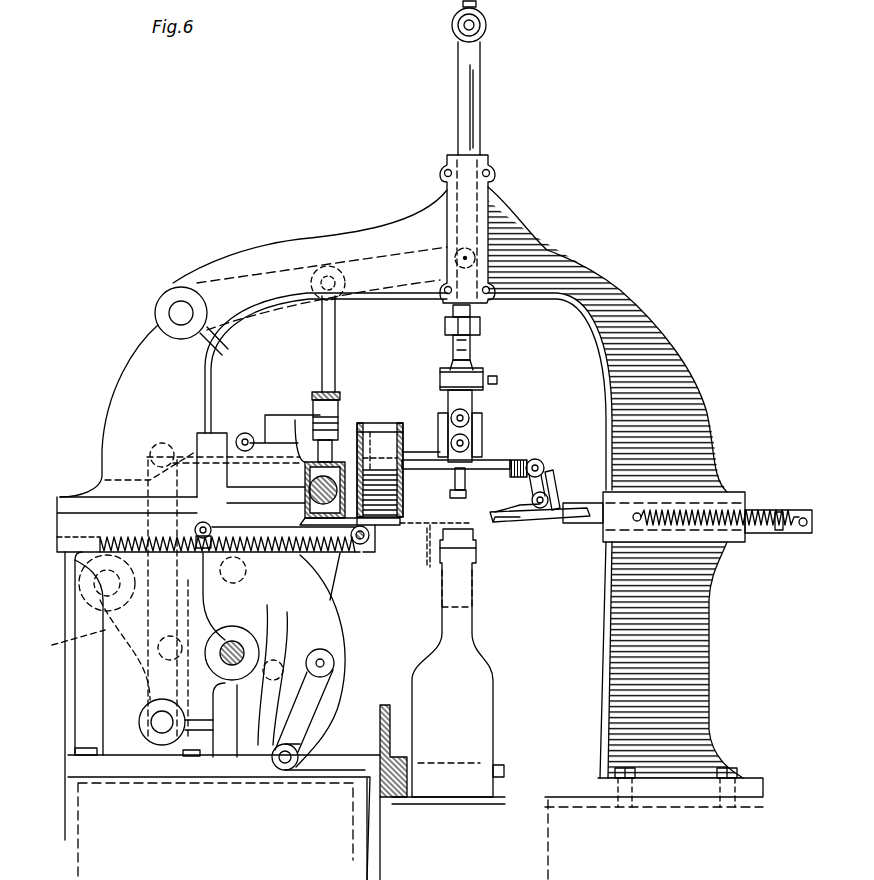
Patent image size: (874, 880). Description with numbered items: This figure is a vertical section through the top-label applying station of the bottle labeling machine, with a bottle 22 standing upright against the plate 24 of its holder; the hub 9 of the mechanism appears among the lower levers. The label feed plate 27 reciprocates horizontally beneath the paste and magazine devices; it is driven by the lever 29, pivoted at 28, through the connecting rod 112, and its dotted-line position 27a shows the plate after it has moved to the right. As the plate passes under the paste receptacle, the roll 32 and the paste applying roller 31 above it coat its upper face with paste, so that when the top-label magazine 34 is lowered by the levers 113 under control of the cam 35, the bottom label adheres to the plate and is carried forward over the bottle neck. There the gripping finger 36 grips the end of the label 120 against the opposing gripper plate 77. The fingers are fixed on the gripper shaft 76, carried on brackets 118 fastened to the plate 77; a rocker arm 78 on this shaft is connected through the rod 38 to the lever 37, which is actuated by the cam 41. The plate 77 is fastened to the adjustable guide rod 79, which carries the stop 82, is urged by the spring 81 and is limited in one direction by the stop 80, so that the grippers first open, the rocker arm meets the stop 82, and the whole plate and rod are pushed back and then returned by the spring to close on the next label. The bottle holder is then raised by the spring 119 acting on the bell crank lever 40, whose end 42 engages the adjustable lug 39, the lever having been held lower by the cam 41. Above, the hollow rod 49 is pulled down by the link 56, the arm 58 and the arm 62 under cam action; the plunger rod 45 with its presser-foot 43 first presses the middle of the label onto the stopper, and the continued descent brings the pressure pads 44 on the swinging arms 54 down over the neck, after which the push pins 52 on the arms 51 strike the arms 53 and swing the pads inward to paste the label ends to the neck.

The main shaft hub 9 is at (235, 640).
The bottle 22 is at (458, 663).
The plate 24 is at (455, 806).
The label feed plate 27 is at (392, 528).
The dotted line position of the label feed plate 27a is at (424, 555).
The pivot 28 is at (162, 733).
The lever 29 is at (195, 529).
The paste applying roller 31 is at (304, 490).
The roll 32 is at (309, 505).
The top-label magazine 34 is at (400, 423).
The cam 35 is at (300, 762).
The gripping finger 36 is at (525, 505).
The lever 37 is at (406, 533).
The rod 38 is at (496, 461).
The adjustable lug 39 is at (298, 770).
The bell crank lever 40 is at (300, 750).
The cam 41 is at (338, 668).
The end of bell crank lever 42 is at (378, 798).
The presser-foot 43 is at (450, 496).
The pressure pads 44 is at (484, 430).
The plunger rod 45 is at (454, 480).
The hollow rod 49 is at (478, 97).
The arms 51 is at (450, 338).
The adjustable push pins 52 is at (472, 348).
The arms 53 is at (474, 368).
The swinging arms 54 is at (472, 403).
The link 56 is at (336, 332).
The arm 58 is at (363, 258).
The arm 62 is at (88, 650).
The gripper shaft 76 is at (552, 502).
The gripper plate 77 is at (540, 524).
The rocker arm 78 is at (548, 466).
The adjustable guide rod 79 is at (597, 530).
The stop 80 is at (782, 510).
The spring 81 is at (748, 537).
The stop 82 is at (556, 480).
The connecting rod 112 is at (348, 546).
The levers 113 is at (342, 598).
The brackets 118 is at (535, 520).
The spring 119 is at (208, 524).
The label 120 is at (371, 423).